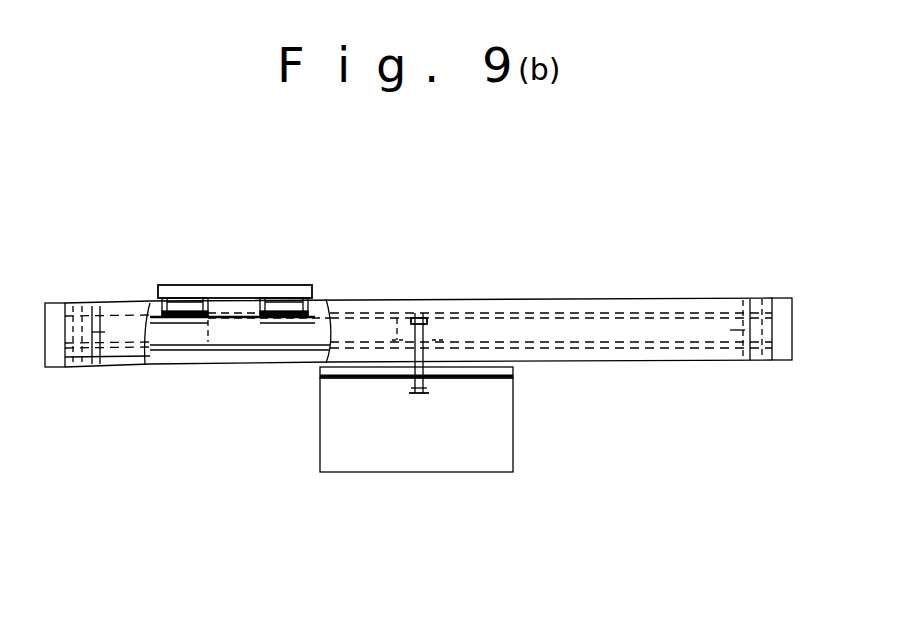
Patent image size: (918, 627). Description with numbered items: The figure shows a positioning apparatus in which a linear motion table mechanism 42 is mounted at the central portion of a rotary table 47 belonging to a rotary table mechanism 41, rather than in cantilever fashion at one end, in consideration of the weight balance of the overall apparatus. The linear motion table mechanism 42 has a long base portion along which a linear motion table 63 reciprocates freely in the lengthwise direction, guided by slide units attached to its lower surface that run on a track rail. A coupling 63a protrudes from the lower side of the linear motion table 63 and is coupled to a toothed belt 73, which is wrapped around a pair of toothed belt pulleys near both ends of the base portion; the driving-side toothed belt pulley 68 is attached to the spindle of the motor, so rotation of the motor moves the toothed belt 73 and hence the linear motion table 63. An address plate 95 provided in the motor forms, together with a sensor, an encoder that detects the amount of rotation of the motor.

The rotary table mechanism 41 is at (297, 496).
The linear motion table mechanism 42 is at (626, 232).
The rotary table 47 is at (522, 373).
The linear motion table 63 is at (233, 293).
The coupling 63a is at (228, 337).
The toothed belt pulley 68 is at (432, 333).
The toothed belt 73 is at (320, 299).
The address plate 95 is at (419, 313).